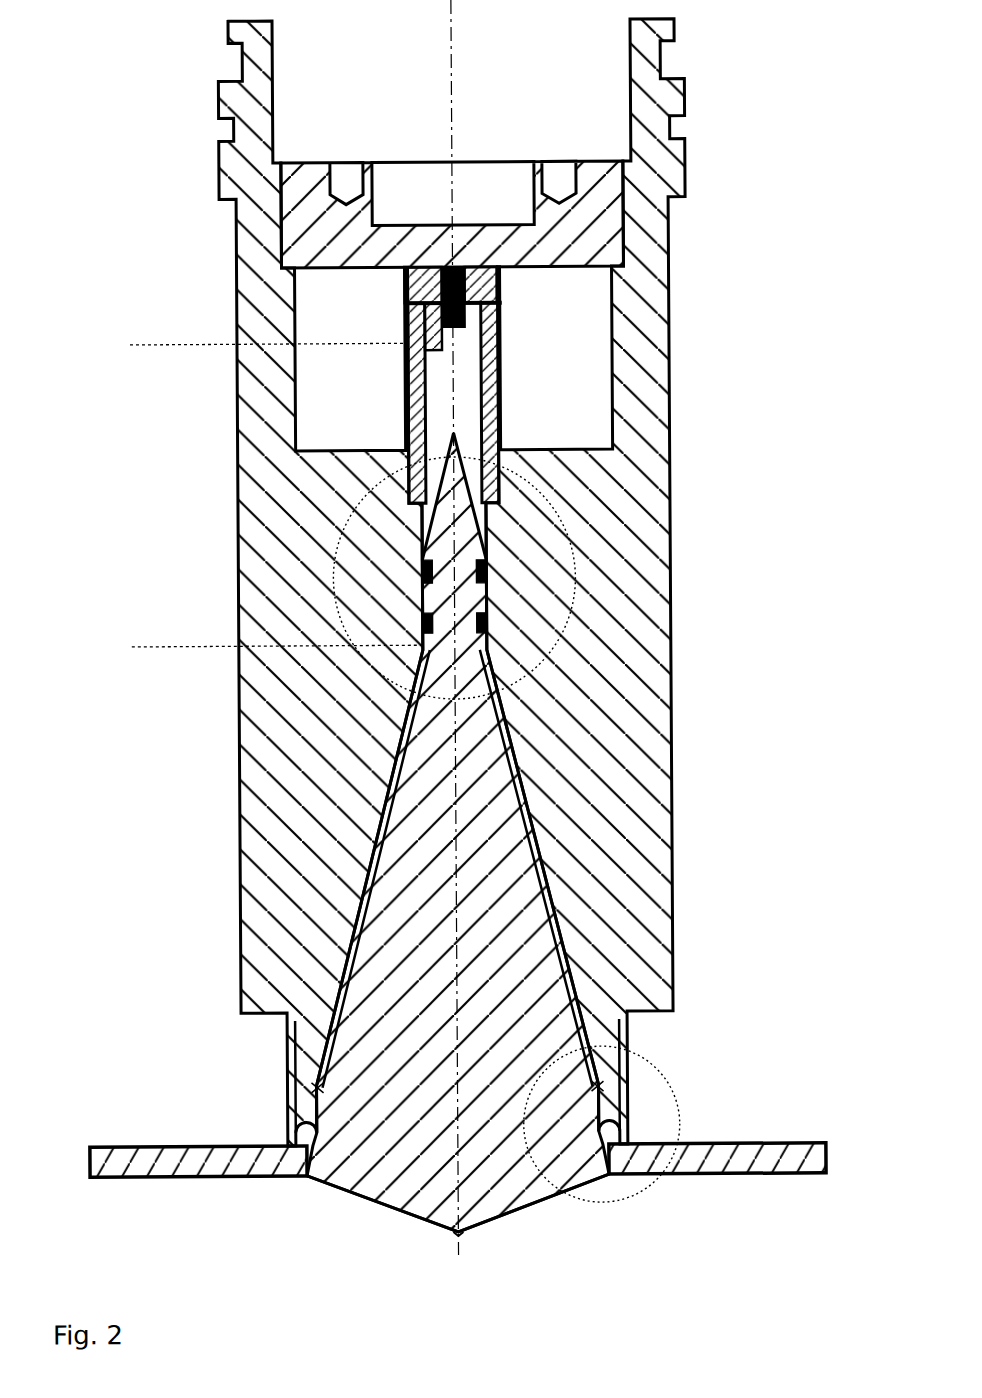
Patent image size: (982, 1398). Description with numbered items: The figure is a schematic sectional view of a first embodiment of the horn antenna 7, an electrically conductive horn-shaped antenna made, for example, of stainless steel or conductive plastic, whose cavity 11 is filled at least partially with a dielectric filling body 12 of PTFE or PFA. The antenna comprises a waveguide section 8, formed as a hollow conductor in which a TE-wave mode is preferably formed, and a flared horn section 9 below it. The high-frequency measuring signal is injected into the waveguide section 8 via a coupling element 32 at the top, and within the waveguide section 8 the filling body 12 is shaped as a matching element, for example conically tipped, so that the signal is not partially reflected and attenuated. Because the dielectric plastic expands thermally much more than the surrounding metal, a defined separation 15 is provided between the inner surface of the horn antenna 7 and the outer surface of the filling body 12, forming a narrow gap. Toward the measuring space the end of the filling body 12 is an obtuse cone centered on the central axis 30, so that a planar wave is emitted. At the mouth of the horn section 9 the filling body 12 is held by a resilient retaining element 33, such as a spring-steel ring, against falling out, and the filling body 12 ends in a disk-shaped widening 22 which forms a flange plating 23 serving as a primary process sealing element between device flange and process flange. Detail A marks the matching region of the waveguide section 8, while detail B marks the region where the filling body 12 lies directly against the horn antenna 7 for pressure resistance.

The horn antenna 7 is at (597, 910).
The waveguide section 8 is at (150, 645).
The horn section 9 is at (150, 645).
The cavity 11 is at (336, 1206).
The filling body 12 is at (490, 1162).
The defined separation 15 is at (561, 882).
The disk-shaped widening 22 is at (711, 1152).
The flange plating 23 is at (717, 1158).
The central axis 30 is at (451, 1247).
The coupling element 32 is at (443, 300).
The retaining element 33 is at (284, 1072).
The detail A is at (552, 517).
The detail B is at (632, 1068).